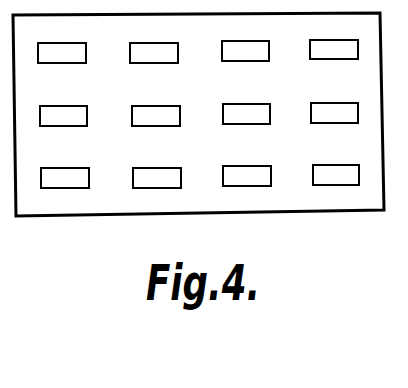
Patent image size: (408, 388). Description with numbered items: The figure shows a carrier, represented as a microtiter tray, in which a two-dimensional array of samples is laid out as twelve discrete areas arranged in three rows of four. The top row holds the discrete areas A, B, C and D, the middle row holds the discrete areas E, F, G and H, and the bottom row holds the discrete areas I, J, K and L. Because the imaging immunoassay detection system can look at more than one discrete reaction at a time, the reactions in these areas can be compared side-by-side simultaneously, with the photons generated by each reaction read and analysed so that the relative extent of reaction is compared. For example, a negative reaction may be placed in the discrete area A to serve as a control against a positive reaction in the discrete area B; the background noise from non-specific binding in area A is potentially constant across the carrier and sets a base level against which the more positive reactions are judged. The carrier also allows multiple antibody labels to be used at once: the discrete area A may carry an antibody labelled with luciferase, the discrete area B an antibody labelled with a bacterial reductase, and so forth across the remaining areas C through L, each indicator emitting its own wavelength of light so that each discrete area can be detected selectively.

The discrete area A is at (74, 43).
The discrete area B is at (165, 43).
The discrete area C is at (256, 40).
The discrete area D is at (344, 38).
The discrete area E is at (74, 105).
The discrete area F is at (165, 105).
The discrete area G is at (258, 103).
The discrete area H is at (345, 101).
The discrete area I is at (70, 167).
The discrete area J is at (162, 167).
The discrete area K is at (259, 165).
The discrete area L is at (344, 164).